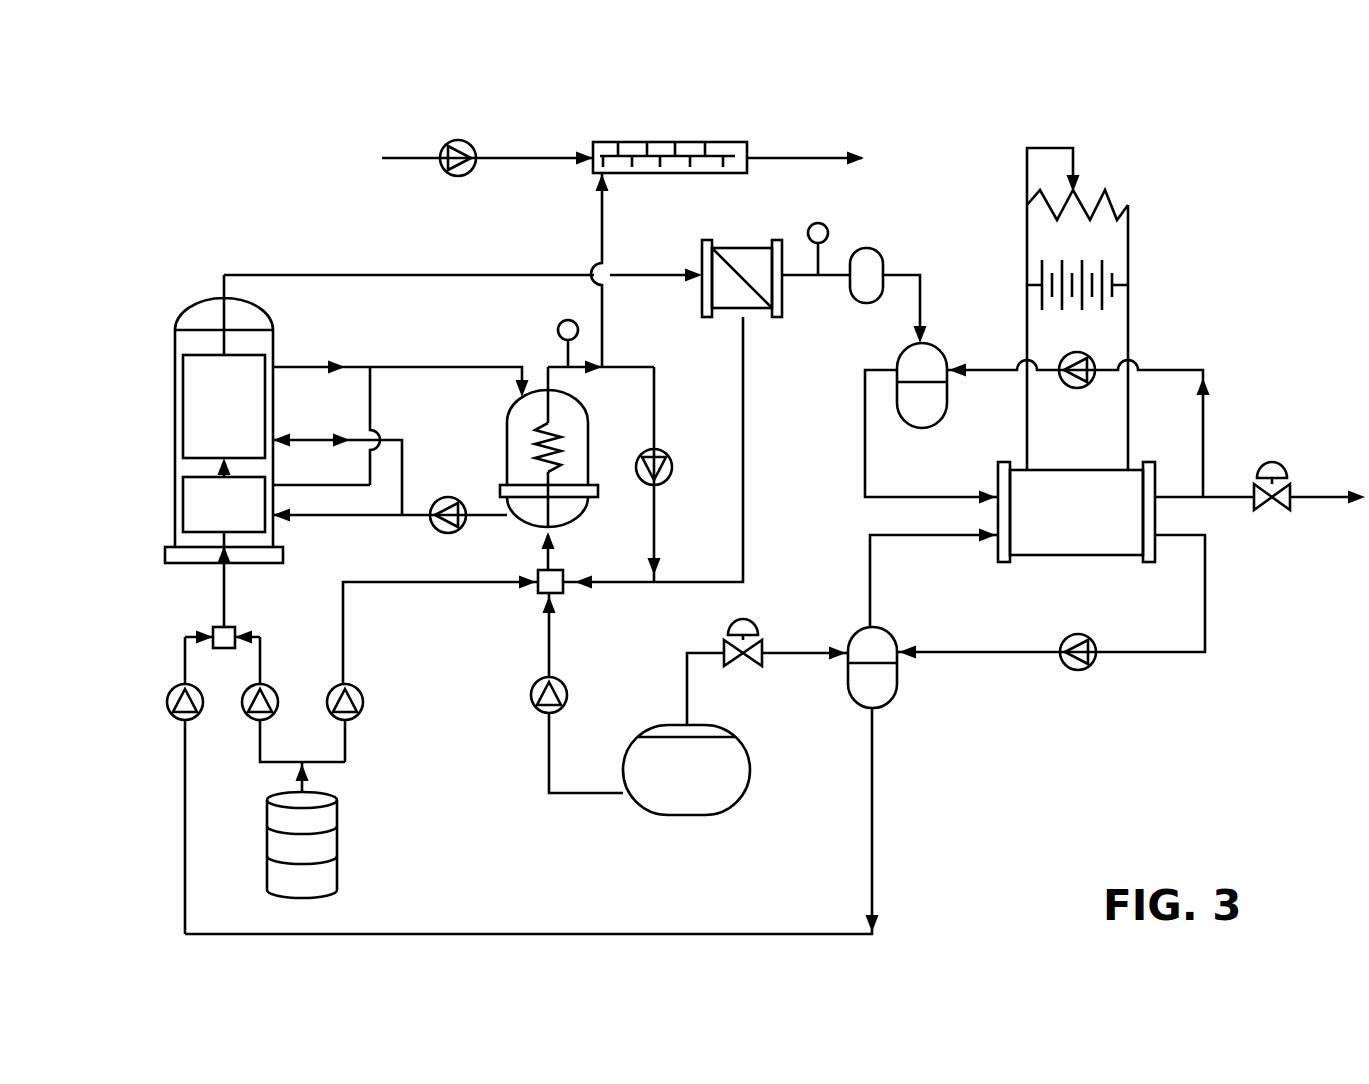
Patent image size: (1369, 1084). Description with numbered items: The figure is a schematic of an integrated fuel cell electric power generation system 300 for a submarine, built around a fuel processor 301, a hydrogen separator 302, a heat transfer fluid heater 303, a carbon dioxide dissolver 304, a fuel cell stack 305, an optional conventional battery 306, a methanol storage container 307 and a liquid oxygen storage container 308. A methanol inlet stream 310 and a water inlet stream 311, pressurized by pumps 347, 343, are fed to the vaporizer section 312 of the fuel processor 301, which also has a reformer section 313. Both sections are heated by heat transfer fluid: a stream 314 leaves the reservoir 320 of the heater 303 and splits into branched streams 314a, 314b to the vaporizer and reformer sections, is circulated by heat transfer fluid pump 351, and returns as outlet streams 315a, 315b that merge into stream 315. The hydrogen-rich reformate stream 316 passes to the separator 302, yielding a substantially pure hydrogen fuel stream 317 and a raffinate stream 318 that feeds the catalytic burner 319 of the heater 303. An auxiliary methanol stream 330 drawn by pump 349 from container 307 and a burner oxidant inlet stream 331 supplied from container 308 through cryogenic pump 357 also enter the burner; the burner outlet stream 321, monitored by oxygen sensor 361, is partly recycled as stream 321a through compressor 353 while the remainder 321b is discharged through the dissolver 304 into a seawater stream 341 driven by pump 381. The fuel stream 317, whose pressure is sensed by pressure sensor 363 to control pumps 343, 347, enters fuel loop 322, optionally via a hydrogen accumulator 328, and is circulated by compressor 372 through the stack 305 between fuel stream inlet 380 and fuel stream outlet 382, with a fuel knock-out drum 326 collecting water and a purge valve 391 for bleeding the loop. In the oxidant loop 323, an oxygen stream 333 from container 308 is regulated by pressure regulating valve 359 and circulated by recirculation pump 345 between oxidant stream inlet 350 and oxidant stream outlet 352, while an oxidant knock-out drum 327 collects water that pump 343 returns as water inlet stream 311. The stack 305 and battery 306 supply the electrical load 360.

The integrated fuel cell electric power generation system 300 is at (240, 222).
The fuel processor 301 is at (186, 419).
The hydrogen separator 302 is at (720, 228).
The heat transfer fluid heater 303 is at (530, 447).
The carbon dioxide dissolver 304 is at (698, 140).
The fuel cell stack 305 is at (1099, 525).
The conventional battery 306 is at (1100, 270).
The methanol storage container 307 is at (335, 848).
The liquid oxygen (LOX) storage container 308 is at (685, 816).
The methanol inlet stream 310 is at (262, 645).
The water inlet stream 311 is at (180, 650).
The vaporizer section 312 is at (249, 517).
The reformer section 313 is at (249, 419).
The heat transfer fluid stream 314 is at (418, 518).
The branched stream 314a is at (308, 518).
The branched stream 314b is at (300, 438).
The merged stream 315 is at (450, 366).
The heat transfer fluid outlet stream 315a is at (355, 484).
The heat transfer fluid outlet stream 315b is at (308, 366).
The hydrogen-rich reformate stream 316 is at (397, 273).
The substantially pure hydrogen fuel stream 317 is at (800, 280).
The raffinate stream 318 is at (745, 378).
The catalytic burner 319 is at (565, 440).
The reservoir 320 is at (505, 440).
The burner outlet stream 321 is at (547, 365).
The recycled portion of burner outlet stream 321a is at (655, 378).
The remainder of burner outlet stream 321b is at (605, 320).
The fuel loop 322 is at (1225, 356).
The oxidant loop 323 is at (1238, 633).
The fuel knock-out drum 326 is at (937, 343).
The oxidant knock-out drum 327 is at (885, 708).
The hydrogen accumulator 328 is at (885, 260).
The auxiliary methanol stream 330 is at (455, 582).
The burner oxidant inlet stream 331 is at (552, 628).
The oxygen stream 333 is at (812, 652).
The seawater stream 341 is at (523, 156).
The pump 343 is at (175, 718).
The oxidant stream recirculation pump 345 is at (1080, 672).
The pump 347 is at (253, 718).
The pump 349 is at (363, 700).
The oxidant stream inlet 350 is at (996, 540).
The heat transfer fluid pump 351 is at (455, 533).
The oxidant stream outlet 352 is at (1156, 545).
The compressor 353 is at (662, 485).
The cryogenic pump 357 is at (568, 693).
The pressure regulating valve 359 is at (755, 618).
The electrical load 360 is at (1105, 195).
The oxygen sensor 361 is at (580, 300).
The pressure sensor 363 is at (826, 226).
The compressor 372 is at (1090, 362).
The fuel stream inlet 380 is at (996, 483).
The pump 381 is at (466, 175).
The fuel stream outlet 382 is at (1183, 425).
The purge valve 391 is at (1270, 460).